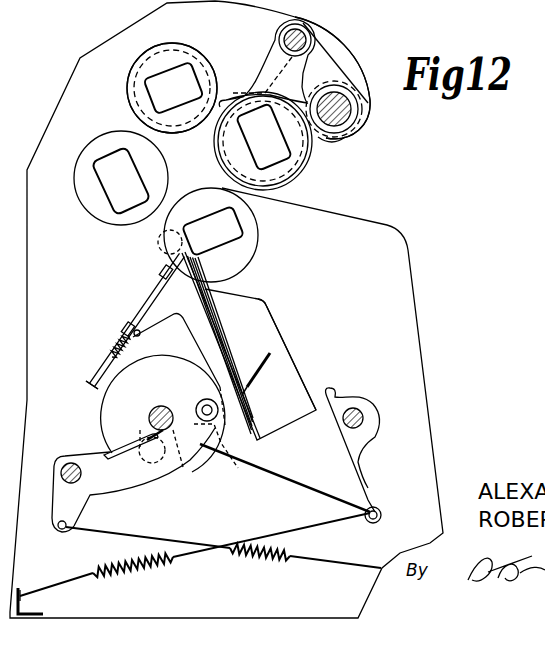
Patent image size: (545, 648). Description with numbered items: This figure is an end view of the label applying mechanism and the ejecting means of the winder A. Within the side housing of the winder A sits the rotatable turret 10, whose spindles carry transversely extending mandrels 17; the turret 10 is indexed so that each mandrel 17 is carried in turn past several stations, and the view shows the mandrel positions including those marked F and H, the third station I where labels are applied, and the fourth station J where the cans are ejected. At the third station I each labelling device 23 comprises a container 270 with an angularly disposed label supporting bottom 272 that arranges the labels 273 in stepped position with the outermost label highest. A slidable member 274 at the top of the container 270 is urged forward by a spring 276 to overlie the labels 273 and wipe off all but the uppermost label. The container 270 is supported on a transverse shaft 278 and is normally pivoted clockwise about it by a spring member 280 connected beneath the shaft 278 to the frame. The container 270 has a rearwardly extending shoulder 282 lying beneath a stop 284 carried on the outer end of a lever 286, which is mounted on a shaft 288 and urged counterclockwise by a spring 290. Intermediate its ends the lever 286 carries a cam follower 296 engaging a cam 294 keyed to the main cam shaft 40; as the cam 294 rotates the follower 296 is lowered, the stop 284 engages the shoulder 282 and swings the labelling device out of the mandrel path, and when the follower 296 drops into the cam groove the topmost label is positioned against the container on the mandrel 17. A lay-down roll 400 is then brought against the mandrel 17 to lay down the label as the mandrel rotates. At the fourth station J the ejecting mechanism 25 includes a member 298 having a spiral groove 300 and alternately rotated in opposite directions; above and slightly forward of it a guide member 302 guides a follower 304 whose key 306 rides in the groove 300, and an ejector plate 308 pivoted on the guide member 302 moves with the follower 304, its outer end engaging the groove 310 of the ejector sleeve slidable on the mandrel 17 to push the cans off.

The winder A is at (71, 63).
The type rotor F is at (168, 68).
The rotatable turret 10 is at (110, 133).
The type rotor H is at (93, 189).
The groove 310 is at (227, 147).
The fourth station J is at (287, 168).
The third station I is at (238, 243).
The mandrel 17 is at (197, 214).
The lay-down roll 400 is at (157, 243).
The guide member 302 is at (300, 30).
The ejector plate 308 is at (263, 80).
The key 306 is at (352, 103).
The follower 304 is at (363, 124).
The spiral groove 300 is at (367, 70).
The member having a spiral groove 298 is at (342, 131).
The ejecting mechanism 25 is at (331, 92).
The container 270 is at (292, 383).
The labels 273 is at (222, 330).
The labelling device 23 is at (284, 318).
The label supporting bottom 272 is at (273, 352).
The shaft 278 is at (363, 407).
The slidable member 274 is at (143, 301).
The spring 276 is at (120, 348).
The cam 294 is at (102, 398).
The main cam shaft 40 is at (155, 410).
The stop 284 is at (197, 402).
The cam follower 296 is at (152, 440).
The lever 286 is at (148, 483).
The shaft 288 is at (68, 463).
The shoulder 282 is at (218, 448).
The spring member 280 is at (165, 552).
The spring 290 is at (297, 553).